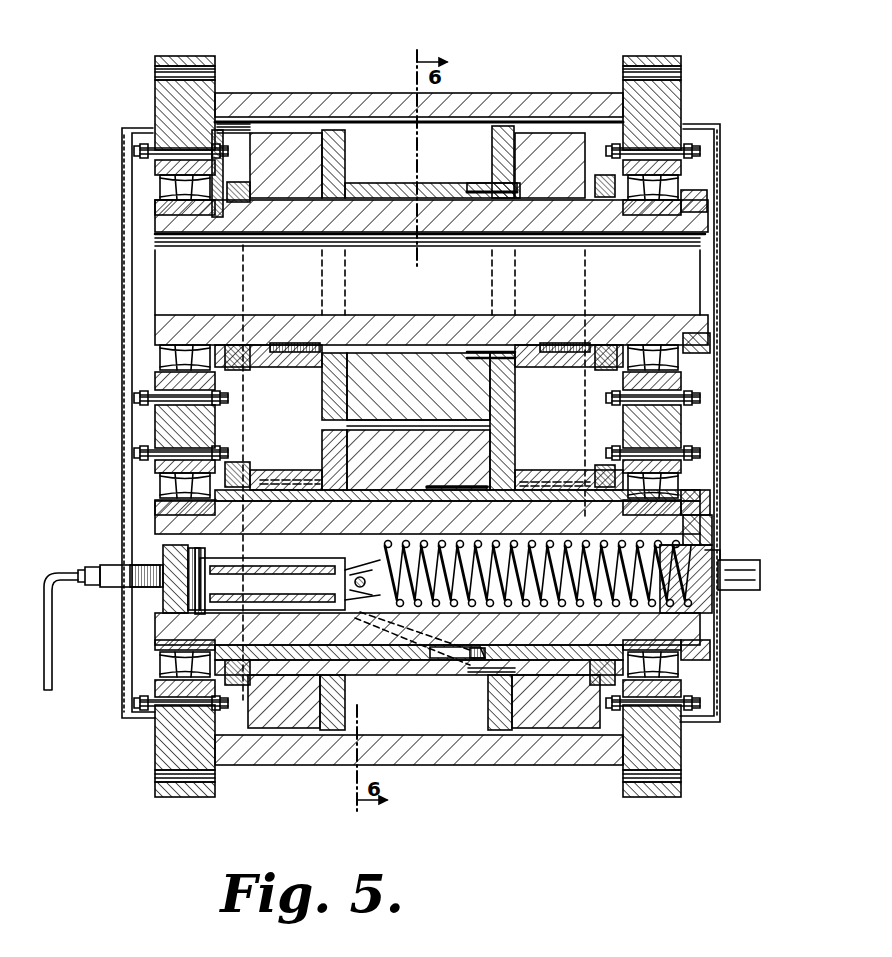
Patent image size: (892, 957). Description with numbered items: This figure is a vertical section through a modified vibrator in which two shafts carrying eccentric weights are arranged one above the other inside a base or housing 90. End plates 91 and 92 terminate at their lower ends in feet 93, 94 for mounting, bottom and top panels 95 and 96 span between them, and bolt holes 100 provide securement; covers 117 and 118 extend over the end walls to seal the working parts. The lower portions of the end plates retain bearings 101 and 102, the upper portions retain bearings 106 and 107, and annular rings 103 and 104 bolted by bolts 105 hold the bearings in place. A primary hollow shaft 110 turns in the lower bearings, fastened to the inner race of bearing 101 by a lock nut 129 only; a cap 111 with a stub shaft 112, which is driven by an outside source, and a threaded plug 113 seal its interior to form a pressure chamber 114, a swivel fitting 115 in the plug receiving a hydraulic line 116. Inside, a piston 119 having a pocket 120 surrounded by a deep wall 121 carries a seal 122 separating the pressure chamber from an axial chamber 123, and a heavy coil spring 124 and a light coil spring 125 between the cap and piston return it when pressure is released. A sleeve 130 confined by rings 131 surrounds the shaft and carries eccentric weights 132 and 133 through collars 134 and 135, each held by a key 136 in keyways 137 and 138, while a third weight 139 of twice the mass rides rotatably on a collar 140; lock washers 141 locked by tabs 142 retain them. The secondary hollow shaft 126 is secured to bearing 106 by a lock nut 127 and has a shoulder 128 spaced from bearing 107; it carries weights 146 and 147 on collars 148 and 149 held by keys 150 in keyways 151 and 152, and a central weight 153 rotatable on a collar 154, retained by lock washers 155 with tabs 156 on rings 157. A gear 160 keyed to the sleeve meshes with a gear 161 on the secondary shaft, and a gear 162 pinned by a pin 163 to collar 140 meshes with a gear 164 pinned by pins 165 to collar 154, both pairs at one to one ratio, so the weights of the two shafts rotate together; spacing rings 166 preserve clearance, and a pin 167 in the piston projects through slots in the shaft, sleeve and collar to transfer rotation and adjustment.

The base or housing 90 is at (470, 82).
The end plate 91 is at (672, 752).
The end plate 92 is at (165, 752).
The foot 93 is at (680, 792).
The foot 94 is at (155, 792).
The bottom panel 95 is at (420, 762).
The top panel 96 is at (383, 95).
The bolt holes 100 is at (153, 74).
The bearing 101 is at (690, 683).
The bearing 102 is at (150, 690).
The annular ring 103 is at (708, 720).
The annular ring 104 is at (150, 715).
The bolts 105 is at (138, 150).
The bearing 106 is at (690, 167).
The bearing 107 is at (150, 172).
The hollow shaft 110 is at (165, 628).
The cap 111 is at (715, 532).
The stub shaft 112 is at (752, 565).
The plug 113 is at (170, 600).
The pressure chamber 114 is at (195, 555).
The swivel fitting 115 is at (105, 568).
The hydraulic line 116 is at (52, 665).
The cover 117 is at (722, 224).
The cover 118 is at (122, 330).
The piston 119 is at (348, 668).
The pocket 120 is at (300, 675).
The wall 121 is at (335, 600).
The seal 122 is at (212, 590).
The axial chamber 123 is at (520, 712).
The heavy coil spring 124 is at (700, 630).
The light coil spring 125 is at (710, 600).
The hollow shaft 126 is at (700, 322).
The lock nut 127 is at (712, 350).
The shoulder 128 is at (212, 215).
The lock nut 129 is at (700, 503).
The sleeve 130 is at (408, 665).
The rings 131 is at (575, 680).
The eccentric weight 132 is at (520, 720).
The eccentric weight 133 is at (280, 690).
The collar 134 is at (550, 468).
The collar 135 is at (258, 468).
The key 136 is at (305, 468).
The keyway 137 is at (280, 478).
The keyway 138 is at (282, 496).
The eccentric weight 139 is at (415, 450).
The collar 140 is at (450, 690).
The lock washer 141 is at (243, 465).
The tab 142 is at (605, 454).
The eccentric weight 146 is at (548, 150).
The eccentric weight 147 is at (283, 150).
The collar 148 is at (590, 340).
The collar 149 is at (290, 337).
The key 150 is at (330, 345).
The keyway 151 is at (545, 350).
The keyway 152 is at (520, 345).
The central eccentric weight 153 is at (410, 358).
The collar 154 is at (405, 186).
The lock washer 155 is at (238, 185).
The tab 156 is at (603, 195).
The ring 157 is at (245, 340).
The gear 160 is at (300, 675).
The gear 161 is at (345, 150).
The gear 162 is at (485, 710).
The pin 163 is at (480, 690).
The gear 164 is at (500, 135).
The pins 165 is at (477, 183).
The spacing washers or rings 166 is at (360, 195).
The pin or rod 167 is at (340, 582).